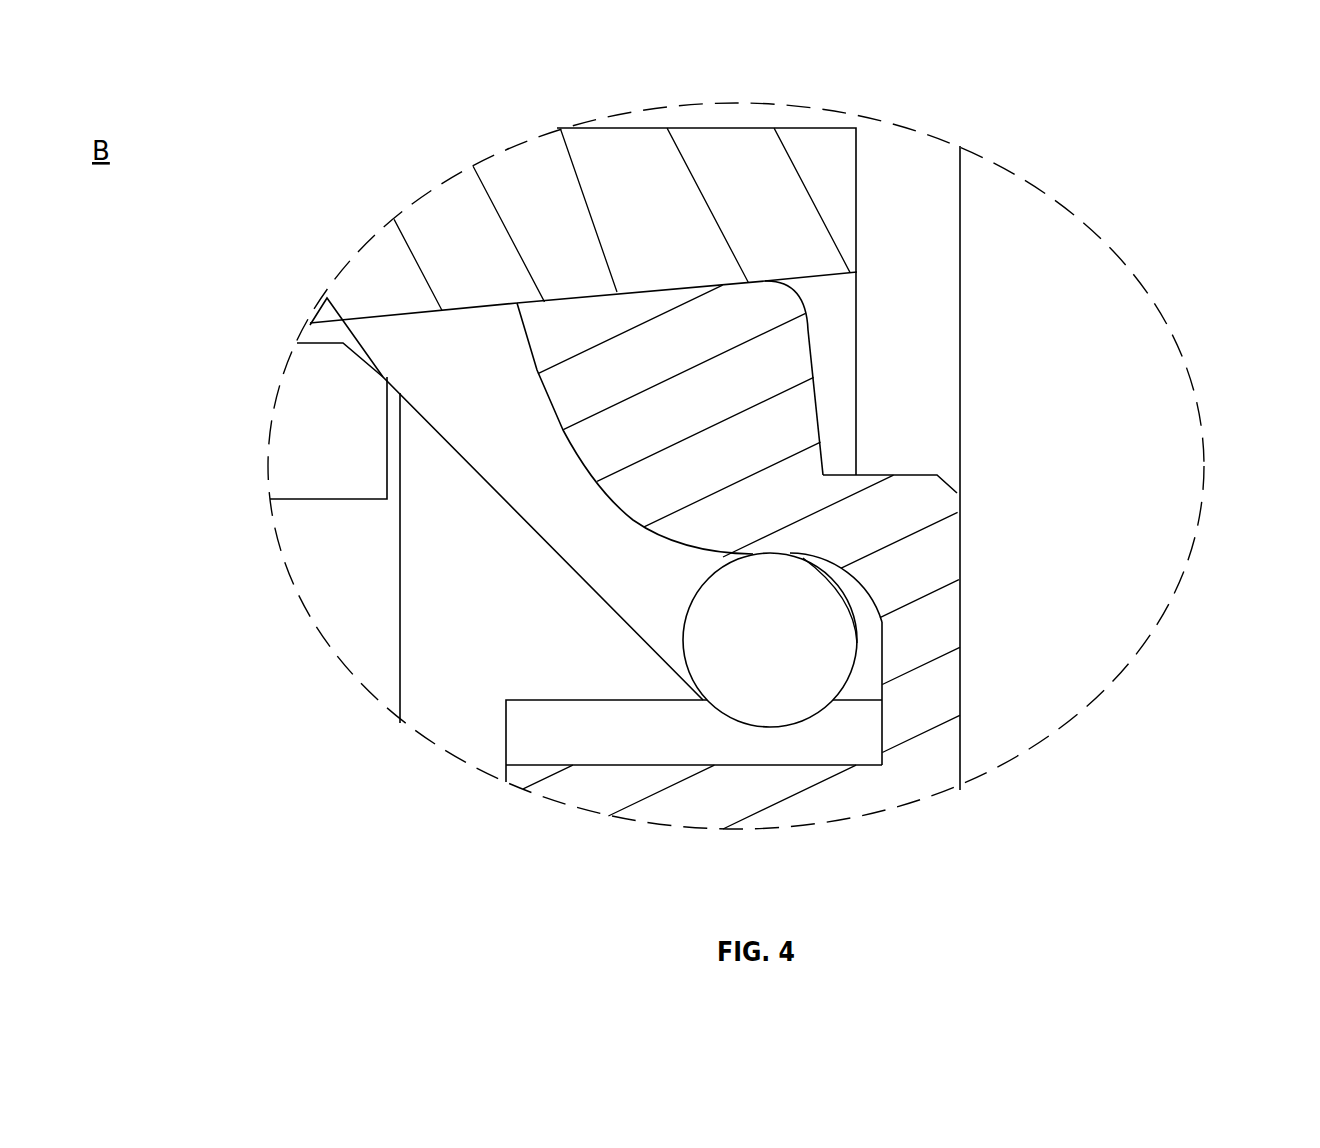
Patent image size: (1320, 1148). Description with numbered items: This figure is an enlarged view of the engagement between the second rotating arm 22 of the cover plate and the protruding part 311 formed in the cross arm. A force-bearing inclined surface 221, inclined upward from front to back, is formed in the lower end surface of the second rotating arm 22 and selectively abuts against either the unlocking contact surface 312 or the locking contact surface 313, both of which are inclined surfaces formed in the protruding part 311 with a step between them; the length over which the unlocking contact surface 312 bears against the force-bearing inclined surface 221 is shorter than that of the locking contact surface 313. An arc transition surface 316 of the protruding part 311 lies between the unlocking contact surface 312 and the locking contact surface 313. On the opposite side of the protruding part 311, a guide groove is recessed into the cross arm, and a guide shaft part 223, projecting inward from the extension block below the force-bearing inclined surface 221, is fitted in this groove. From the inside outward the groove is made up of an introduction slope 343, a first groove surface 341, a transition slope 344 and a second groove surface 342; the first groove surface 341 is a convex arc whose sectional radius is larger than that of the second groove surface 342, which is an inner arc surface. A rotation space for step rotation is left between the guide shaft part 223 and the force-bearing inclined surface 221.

The second rotating arm 22 is at (733, 183).
The force-bearing inclined surface 221 is at (403, 313).
The guide shaft part 223 is at (770, 640).
The protruding part 311 is at (693, 398).
The unlocking contact surface 312 is at (820, 403).
The locking contact surface 313 is at (613, 292).
The arc transition surface 316 is at (793, 287).
The first groove surface 341 is at (623, 513).
The second groove surface 342 is at (882, 578).
The introduction slope 343 is at (528, 345).
The transition slope 344 is at (800, 548).